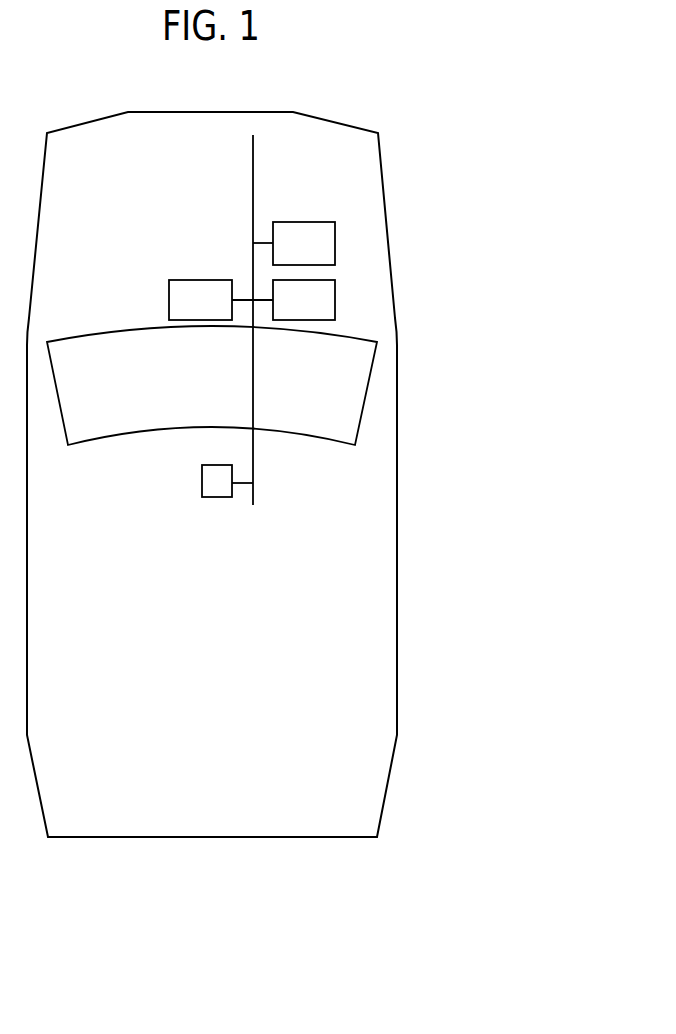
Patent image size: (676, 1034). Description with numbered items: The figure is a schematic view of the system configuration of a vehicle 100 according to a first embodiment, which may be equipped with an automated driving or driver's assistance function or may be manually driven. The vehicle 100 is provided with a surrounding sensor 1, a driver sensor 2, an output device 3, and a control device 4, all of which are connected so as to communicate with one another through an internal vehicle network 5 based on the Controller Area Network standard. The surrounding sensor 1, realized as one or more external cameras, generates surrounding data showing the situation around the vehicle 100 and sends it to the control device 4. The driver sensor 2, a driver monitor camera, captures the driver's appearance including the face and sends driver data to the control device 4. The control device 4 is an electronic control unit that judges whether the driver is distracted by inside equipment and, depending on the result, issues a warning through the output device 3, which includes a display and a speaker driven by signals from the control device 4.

The vehicle 100 is at (397, 712).
The surrounding sensor 1 is at (202, 482).
The driver sensor 2 is at (335, 305).
The output device 3 is at (168, 300).
The control device 4 is at (335, 242).
The internal vehicle network 5 is at (255, 380).